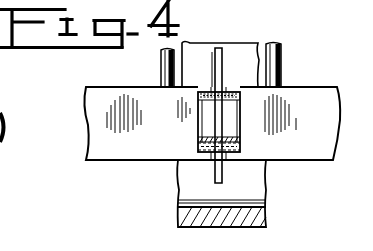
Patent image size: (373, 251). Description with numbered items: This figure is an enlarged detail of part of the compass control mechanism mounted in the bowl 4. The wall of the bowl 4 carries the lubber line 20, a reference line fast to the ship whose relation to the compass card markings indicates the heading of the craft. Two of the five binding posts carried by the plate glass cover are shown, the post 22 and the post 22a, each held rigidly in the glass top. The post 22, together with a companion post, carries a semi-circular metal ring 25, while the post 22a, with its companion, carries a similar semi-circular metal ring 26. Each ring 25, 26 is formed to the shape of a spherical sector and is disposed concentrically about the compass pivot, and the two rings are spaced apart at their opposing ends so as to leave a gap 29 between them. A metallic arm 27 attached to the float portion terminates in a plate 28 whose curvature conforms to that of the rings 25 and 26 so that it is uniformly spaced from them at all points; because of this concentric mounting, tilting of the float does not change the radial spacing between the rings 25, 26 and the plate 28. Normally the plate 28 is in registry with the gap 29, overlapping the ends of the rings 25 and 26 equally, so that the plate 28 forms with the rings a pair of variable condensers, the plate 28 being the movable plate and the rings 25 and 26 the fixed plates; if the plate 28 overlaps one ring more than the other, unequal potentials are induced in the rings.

The bowl 4 is at (268, 218).
The lubber line 20 is at (222, 63).
The binding post 22 is at (160, 66).
The binding post 22a is at (283, 62).
The semi-circular metal ring 25 is at (160, 136).
The semi-circular metal ring 26 is at (324, 108).
The metallic arm 27 is at (240, 140).
The plate 28 is at (214, 100).
The gap 29 is at (213, 86).